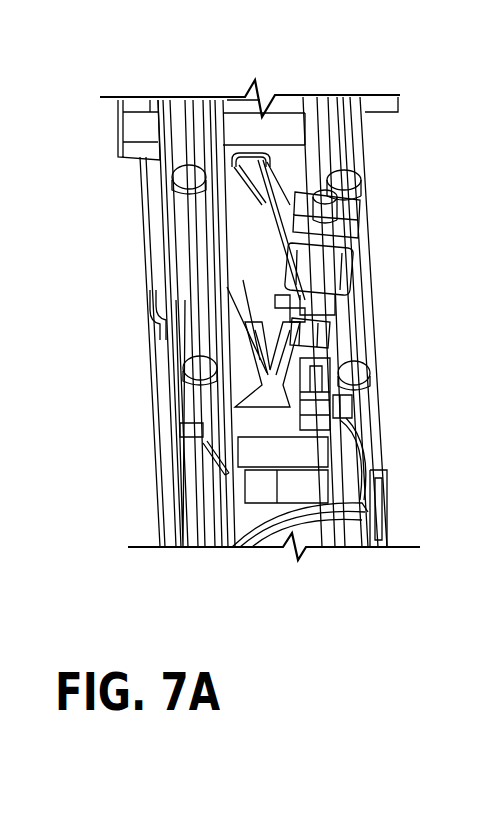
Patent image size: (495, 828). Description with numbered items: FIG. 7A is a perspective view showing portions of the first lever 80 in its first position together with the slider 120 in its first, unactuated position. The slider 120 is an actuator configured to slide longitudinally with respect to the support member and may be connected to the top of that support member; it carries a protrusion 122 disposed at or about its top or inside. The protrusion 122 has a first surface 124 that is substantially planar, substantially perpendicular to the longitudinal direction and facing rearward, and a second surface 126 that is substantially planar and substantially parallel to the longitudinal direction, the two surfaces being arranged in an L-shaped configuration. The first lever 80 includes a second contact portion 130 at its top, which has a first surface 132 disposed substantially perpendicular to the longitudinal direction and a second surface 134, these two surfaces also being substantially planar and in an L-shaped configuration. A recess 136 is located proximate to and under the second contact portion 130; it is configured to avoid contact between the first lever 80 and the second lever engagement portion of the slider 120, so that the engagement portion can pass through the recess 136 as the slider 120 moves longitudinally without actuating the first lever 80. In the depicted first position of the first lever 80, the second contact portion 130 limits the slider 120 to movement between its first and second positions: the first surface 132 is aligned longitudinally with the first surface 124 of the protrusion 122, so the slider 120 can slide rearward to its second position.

The slider 120 is at (116, 127).
The first lever 80 is at (356, 260).
The second contact portion 130 is at (282, 300).
The first surface 132 is at (295, 313).
The second surface 134 is at (305, 340).
The first surface 124 is at (318, 360).
The recess 136 is at (245, 348).
The protrusion 122 is at (334, 402).
The second surface 126 is at (305, 408).